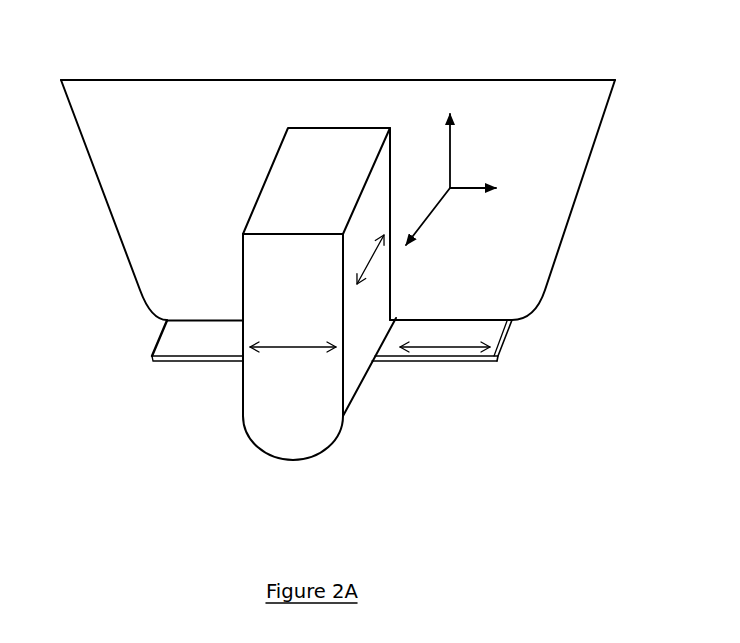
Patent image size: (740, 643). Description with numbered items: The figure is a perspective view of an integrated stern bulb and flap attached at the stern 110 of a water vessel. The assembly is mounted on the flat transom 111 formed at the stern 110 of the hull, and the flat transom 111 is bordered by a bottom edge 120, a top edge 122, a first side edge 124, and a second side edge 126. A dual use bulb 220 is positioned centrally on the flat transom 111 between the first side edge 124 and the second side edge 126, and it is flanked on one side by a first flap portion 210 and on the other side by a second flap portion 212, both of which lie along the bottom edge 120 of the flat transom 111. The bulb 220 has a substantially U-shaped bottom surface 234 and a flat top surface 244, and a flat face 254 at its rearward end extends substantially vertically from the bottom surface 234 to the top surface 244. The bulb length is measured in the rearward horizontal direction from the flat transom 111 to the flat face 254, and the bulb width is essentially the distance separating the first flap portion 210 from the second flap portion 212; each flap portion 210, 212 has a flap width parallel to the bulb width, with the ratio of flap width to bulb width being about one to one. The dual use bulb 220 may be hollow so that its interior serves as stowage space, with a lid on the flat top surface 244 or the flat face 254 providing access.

The stern 110 is at (142, 102).
The flat transom 111 is at (177, 149).
The bottom edge 120 is at (514, 322).
The top edge 122 is at (440, 80).
The first side edge 124 is at (578, 187).
The second side edge 126 is at (100, 196).
The first flap portion 210 is at (433, 363).
The second flap portion 212 is at (187, 363).
The dual use bulb 220 is at (383, 313).
The bottom surface 234 is at (277, 462).
The flat top surface 244 is at (308, 180).
The flat face 254 is at (302, 395).